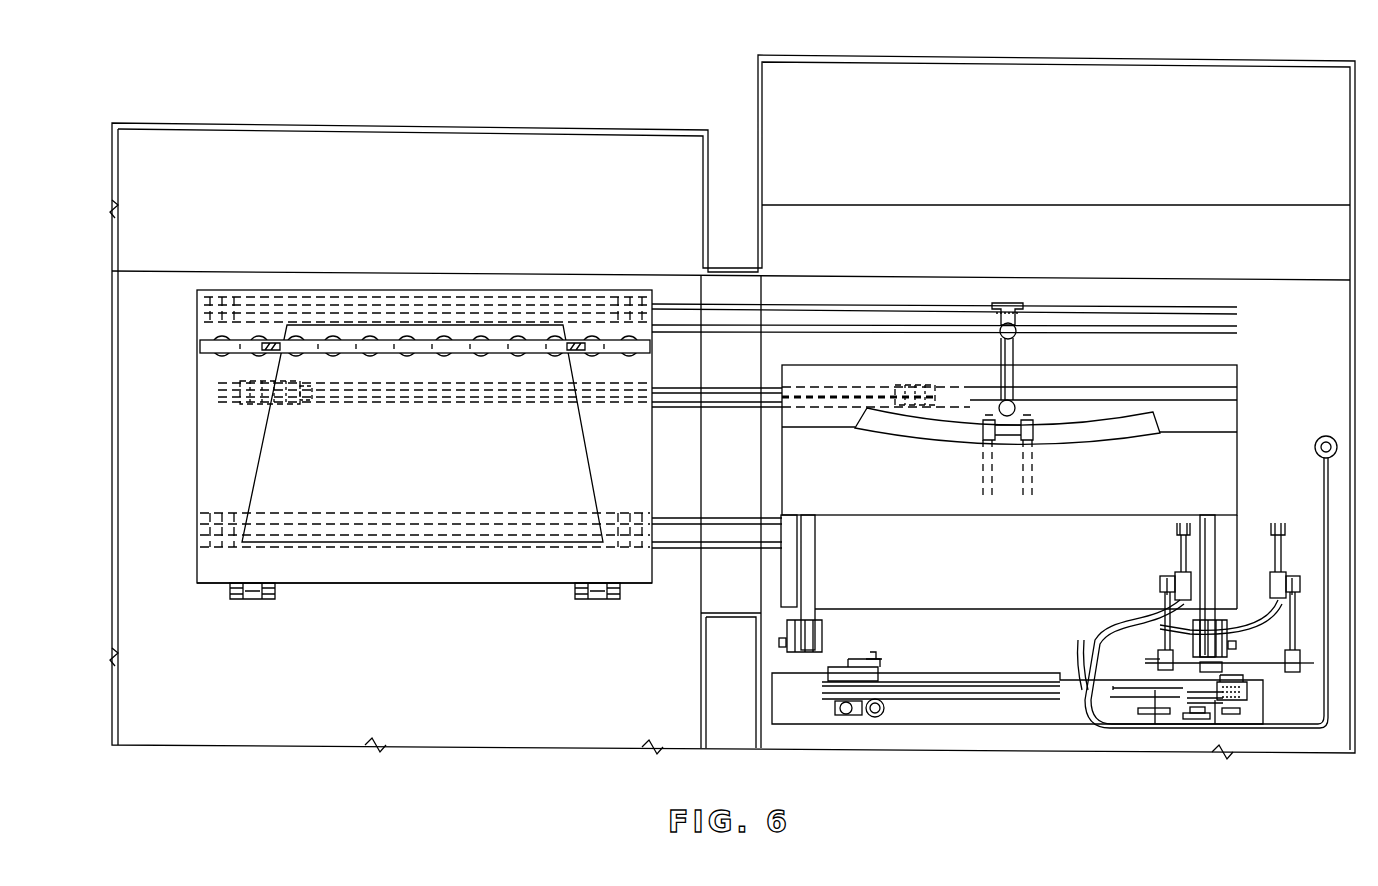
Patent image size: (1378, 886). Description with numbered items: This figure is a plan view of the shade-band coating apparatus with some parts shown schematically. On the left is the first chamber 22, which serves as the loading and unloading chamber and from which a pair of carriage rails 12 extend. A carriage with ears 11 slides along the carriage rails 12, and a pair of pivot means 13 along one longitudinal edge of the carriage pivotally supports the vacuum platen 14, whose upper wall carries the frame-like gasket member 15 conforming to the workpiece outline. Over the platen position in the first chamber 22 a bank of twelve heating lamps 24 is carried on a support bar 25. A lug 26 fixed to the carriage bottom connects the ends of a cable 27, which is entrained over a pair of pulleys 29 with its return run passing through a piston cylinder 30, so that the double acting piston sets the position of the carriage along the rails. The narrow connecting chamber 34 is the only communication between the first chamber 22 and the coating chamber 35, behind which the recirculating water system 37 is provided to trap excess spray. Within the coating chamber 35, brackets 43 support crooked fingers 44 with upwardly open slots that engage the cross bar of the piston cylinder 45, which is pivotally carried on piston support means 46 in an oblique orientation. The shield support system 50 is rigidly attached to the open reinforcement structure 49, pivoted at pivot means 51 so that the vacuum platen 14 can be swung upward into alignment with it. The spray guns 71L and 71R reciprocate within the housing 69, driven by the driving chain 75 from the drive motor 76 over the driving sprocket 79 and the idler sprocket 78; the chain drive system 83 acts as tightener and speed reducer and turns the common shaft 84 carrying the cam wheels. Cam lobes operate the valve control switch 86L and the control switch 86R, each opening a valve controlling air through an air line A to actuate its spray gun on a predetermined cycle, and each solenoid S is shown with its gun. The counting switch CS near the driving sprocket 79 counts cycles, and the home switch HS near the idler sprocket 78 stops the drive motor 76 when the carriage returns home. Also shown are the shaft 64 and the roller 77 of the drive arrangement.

The ears 11 is at (230, 300).
The carriage rails 12 is at (738, 312).
The pivot means 13 is at (248, 600).
The vacuum platen 14 is at (422, 585).
The frame-like gasket member 15 is at (628, 457).
The first chamber 22 is at (608, 125).
The heating lamps 24 is at (440, 352).
The support bar 25 is at (502, 352).
The lug 26 is at (303, 400).
The cable 27 is at (734, 405).
The pulleys 29 is at (258, 405).
The piston cylinder 30 is at (408, 402).
The narrow connecting chamber 34 is at (737, 263).
The coating chamber 35 is at (930, 47).
The recirculating water system 37 is at (1043, 253).
The brackets 43 is at (1035, 497).
The crooked fingers 44 is at (985, 450).
The piston cylinder 45 is at (1016, 360).
The piston support means 46 is at (1027, 306).
The open reinforcement structure 49 is at (818, 556).
The shield support system 50 is at (1011, 621).
The pivot means 51 is at (779, 643).
The shaft 64 is at (1308, 660).
The housing 69 is at (1003, 730).
The spray gun 71L is at (1183, 522).
The spray gun 71R is at (1278, 522).
The driving chain 75 is at (970, 682).
The drive motor 76 is at (879, 718).
The roller carriage 77 is at (838, 716).
The idler sprocket 78 is at (1250, 690).
The driving sprocket 79 is at (806, 680).
The chain drive system 83 is at (1216, 724).
The common shaft 84 is at (1155, 724).
The valve control switch 86L is at (1084, 703).
The control switch 86R is at (1200, 668).
The air line A is at (1118, 624).
The solenoid S is at (1170, 605).
The counting switch CS is at (871, 652).
The home switch HS is at (1228, 664).